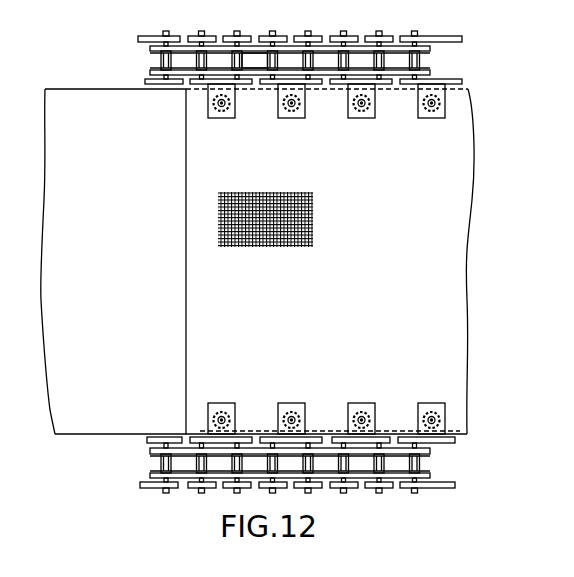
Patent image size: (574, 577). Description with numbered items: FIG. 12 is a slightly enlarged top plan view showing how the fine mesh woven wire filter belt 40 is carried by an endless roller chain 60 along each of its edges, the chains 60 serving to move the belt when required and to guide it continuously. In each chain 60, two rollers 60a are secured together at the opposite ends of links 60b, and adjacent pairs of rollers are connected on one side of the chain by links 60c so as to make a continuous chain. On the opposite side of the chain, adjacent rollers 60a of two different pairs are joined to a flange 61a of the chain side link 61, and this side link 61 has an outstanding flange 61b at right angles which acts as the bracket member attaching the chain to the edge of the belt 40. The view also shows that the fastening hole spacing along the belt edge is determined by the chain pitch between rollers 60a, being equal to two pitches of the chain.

The filter belt 40 is at (387, 277).
The roller chain 60 is at (436, 37).
The roller 60a is at (230, 56).
The link 60b is at (260, 82).
The link 60c is at (266, 64).
The chain side link 61 is at (423, 119).
The flange 61a is at (316, 86).
The outstanding flange 61b is at (209, 117).